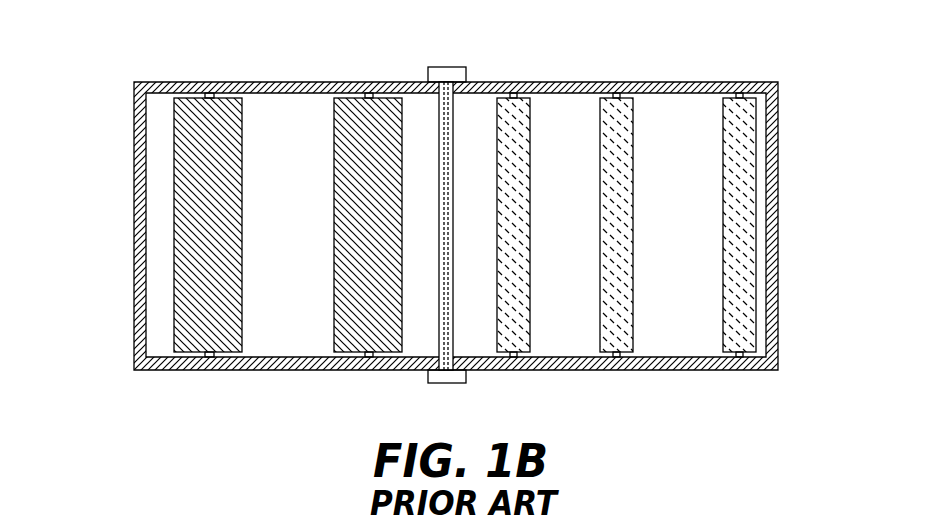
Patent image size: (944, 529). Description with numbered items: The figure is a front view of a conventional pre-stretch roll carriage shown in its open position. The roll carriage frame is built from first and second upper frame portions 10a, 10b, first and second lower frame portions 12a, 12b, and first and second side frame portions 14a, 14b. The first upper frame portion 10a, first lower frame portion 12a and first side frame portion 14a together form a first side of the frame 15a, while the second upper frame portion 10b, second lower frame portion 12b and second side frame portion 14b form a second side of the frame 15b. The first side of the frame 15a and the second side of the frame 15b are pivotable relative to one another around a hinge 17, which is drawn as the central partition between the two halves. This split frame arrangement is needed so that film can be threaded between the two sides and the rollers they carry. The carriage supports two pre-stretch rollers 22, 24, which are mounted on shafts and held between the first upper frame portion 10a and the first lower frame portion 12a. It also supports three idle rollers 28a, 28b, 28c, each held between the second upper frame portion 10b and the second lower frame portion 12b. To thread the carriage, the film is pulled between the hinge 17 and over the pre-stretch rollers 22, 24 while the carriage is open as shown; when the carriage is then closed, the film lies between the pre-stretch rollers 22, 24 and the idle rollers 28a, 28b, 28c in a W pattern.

The first upper frame portion 10a is at (325, 83).
The second upper frame portion 10b is at (663, 93).
The first lower frame portion 12a is at (292, 370).
The second lower frame portion 12b is at (690, 370).
The first side frame portion 14a is at (135, 222).
The second side frame portion 14b is at (779, 228).
The first side of the frame 15a is at (100, 218).
The second side of the frame 15b is at (819, 226).
The hinge 17 is at (453, 160).
The pre-stretch roller 22 is at (335, 237).
The pre-stretch roller 24 is at (243, 163).
The idle roller 28a is at (522, 270).
The idle roller 28b is at (623, 258).
The idle roller 28c is at (724, 333).